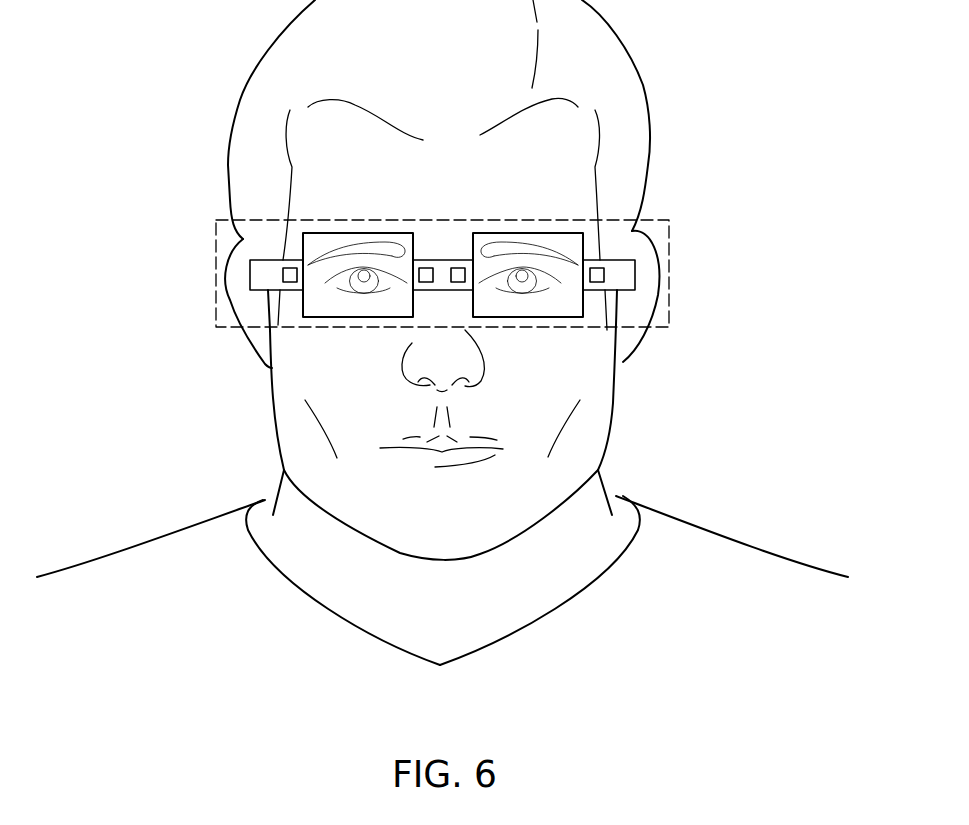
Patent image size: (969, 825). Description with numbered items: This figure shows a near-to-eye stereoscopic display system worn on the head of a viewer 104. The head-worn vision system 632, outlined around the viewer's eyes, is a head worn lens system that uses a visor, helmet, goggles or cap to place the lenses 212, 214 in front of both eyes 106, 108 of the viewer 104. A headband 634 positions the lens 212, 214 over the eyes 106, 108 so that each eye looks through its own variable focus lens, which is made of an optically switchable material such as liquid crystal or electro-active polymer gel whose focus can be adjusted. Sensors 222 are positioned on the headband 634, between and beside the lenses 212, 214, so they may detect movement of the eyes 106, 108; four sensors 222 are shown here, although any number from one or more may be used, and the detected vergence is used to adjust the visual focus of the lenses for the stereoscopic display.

The viewer 104 is at (613, 402).
The eye 106 is at (522, 293).
The eye 108 is at (364, 293).
The lens 212 is at (583, 302).
The lens 214 is at (303, 302).
The vergence sensor 222 is at (289, 268).
The head-worn vision system 632 is at (669, 280).
The headband 634 is at (268, 260).